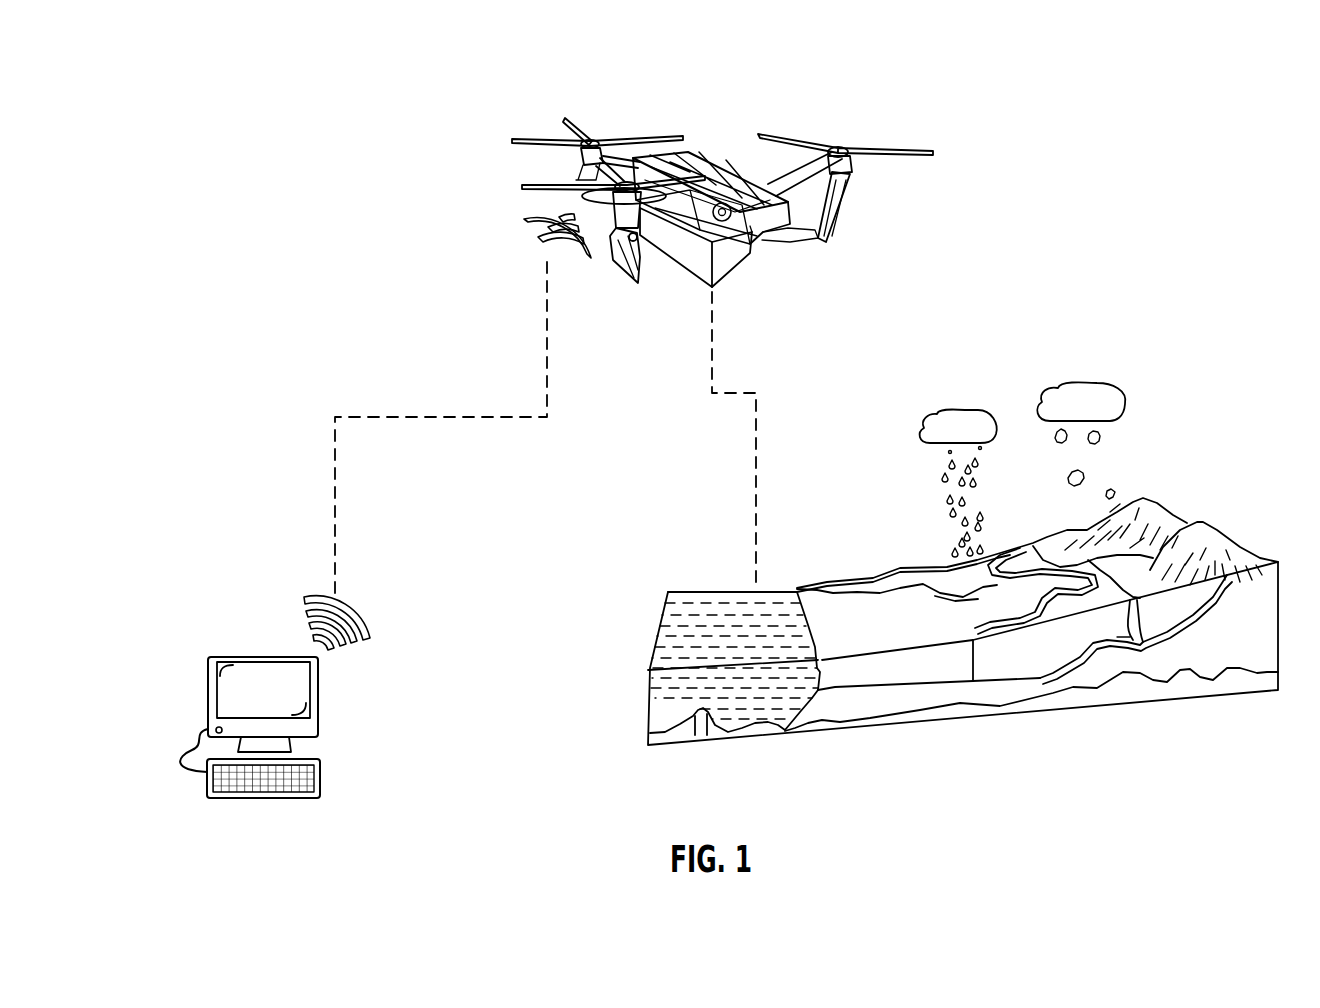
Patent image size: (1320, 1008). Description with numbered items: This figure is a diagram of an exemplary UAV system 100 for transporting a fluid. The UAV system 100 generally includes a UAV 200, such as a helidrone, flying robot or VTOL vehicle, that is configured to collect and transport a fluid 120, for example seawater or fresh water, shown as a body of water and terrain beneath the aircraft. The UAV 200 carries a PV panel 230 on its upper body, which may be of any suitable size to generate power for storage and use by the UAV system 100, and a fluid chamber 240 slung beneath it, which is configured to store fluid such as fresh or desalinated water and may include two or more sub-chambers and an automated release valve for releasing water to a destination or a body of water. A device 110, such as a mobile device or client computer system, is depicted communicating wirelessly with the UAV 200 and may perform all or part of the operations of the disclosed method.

The UAV system 100 is at (1016, 88).
The device 110 is at (199, 655).
The fluid 120 is at (722, 610).
The UAV 200 is at (531, 114).
The PV panel 230 is at (706, 158).
The fluid chamber 240 is at (730, 256).